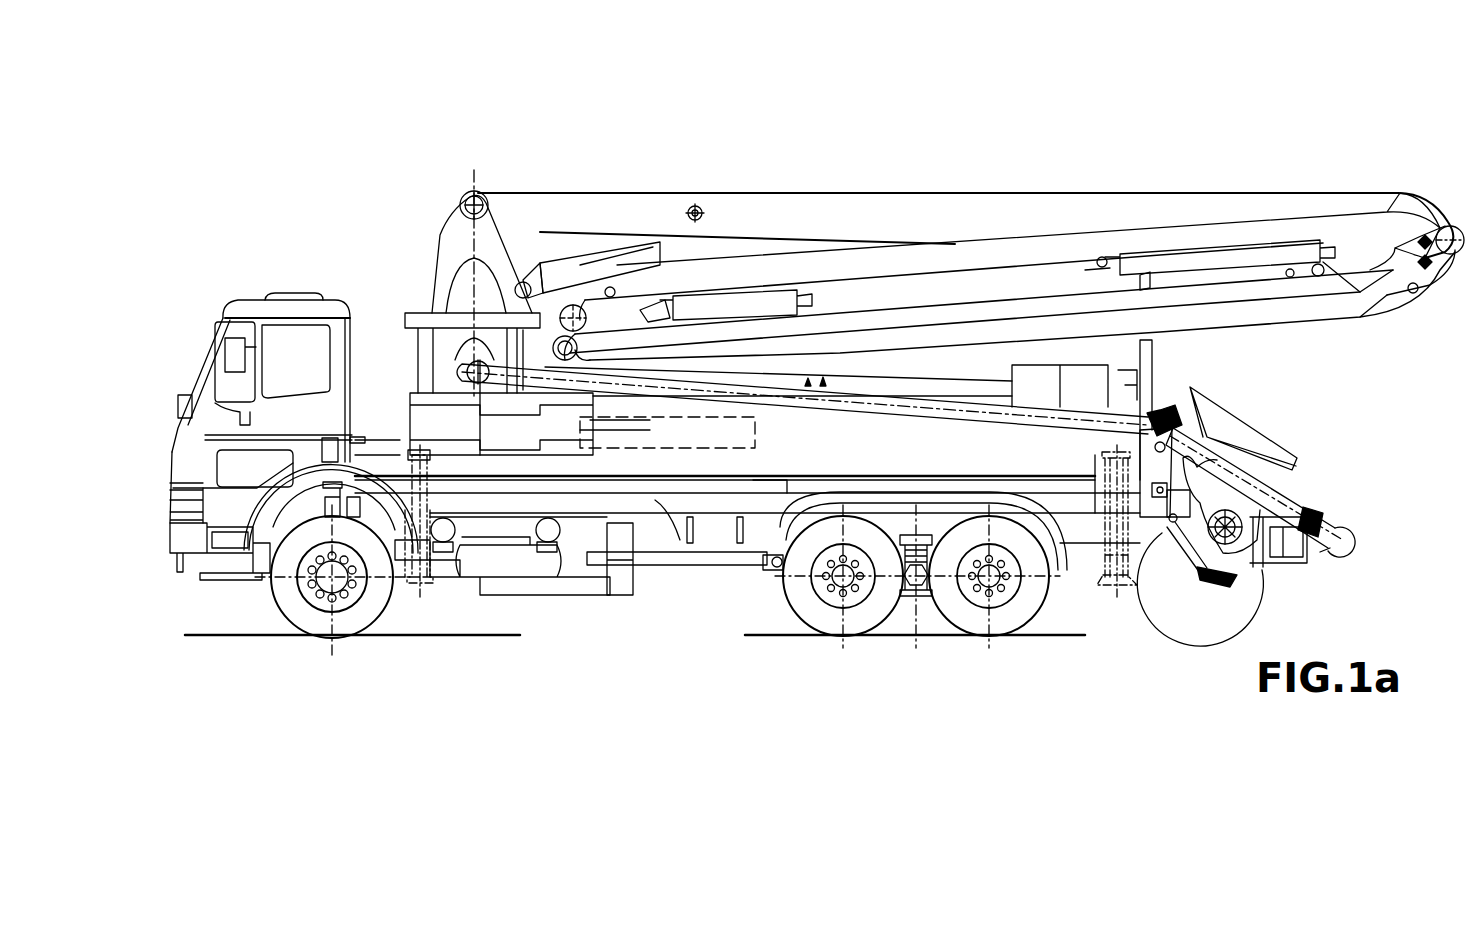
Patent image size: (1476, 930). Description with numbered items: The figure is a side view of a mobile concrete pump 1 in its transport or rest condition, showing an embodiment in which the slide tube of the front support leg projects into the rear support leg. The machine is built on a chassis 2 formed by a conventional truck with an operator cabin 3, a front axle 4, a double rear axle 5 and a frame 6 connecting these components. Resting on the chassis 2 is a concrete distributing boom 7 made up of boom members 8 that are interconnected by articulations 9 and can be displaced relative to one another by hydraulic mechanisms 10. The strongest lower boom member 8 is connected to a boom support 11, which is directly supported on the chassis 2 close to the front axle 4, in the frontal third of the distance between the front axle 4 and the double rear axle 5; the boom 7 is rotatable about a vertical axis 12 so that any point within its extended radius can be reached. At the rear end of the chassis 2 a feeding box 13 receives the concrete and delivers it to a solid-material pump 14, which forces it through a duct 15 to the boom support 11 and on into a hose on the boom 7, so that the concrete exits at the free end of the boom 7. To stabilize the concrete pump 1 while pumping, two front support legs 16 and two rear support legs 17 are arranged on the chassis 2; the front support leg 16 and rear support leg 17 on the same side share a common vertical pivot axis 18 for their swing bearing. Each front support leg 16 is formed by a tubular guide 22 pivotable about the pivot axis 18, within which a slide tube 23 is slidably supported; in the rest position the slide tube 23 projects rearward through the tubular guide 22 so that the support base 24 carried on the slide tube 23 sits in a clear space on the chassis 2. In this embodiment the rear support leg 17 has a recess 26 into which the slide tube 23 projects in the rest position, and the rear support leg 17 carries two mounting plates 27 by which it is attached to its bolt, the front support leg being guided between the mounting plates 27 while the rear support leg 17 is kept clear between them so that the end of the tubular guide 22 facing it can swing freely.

The concrete pump 1 is at (830, 158).
The chassis 2 is at (742, 600).
The operator cabin 3 is at (278, 350).
The front axle 4 is at (348, 620).
The double rear axle 5 is at (833, 620).
The frame 6 is at (570, 500).
The concrete distributing boom 7 is at (1040, 253).
The boom members 8 is at (987, 280).
The articulations 9 is at (1433, 190).
The hydraulic mechanisms 10 is at (688, 315).
The boom support 11 is at (432, 300).
The vertical axis 12 is at (500, 245).
The feeding box 13 is at (1265, 565).
The solid-material pump 14 is at (1160, 540).
The duct 15 is at (690, 450).
The front support legs 16 is at (640, 460).
The rear support legs 17 is at (975, 440).
The vertical pivot axis 18 is at (593, 425).
The tubular guide 22 is at (440, 430).
The slide tube 23 is at (420, 470).
The support base 24 is at (410, 560).
The recess 26 is at (440, 450).
The mounting plates 27 is at (675, 440).